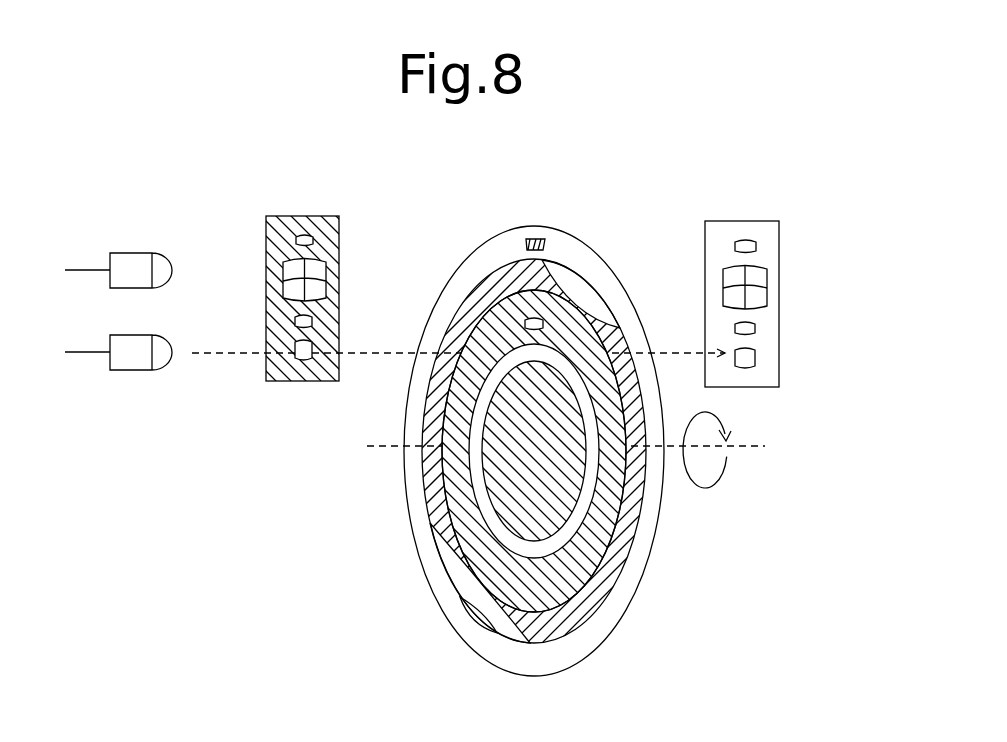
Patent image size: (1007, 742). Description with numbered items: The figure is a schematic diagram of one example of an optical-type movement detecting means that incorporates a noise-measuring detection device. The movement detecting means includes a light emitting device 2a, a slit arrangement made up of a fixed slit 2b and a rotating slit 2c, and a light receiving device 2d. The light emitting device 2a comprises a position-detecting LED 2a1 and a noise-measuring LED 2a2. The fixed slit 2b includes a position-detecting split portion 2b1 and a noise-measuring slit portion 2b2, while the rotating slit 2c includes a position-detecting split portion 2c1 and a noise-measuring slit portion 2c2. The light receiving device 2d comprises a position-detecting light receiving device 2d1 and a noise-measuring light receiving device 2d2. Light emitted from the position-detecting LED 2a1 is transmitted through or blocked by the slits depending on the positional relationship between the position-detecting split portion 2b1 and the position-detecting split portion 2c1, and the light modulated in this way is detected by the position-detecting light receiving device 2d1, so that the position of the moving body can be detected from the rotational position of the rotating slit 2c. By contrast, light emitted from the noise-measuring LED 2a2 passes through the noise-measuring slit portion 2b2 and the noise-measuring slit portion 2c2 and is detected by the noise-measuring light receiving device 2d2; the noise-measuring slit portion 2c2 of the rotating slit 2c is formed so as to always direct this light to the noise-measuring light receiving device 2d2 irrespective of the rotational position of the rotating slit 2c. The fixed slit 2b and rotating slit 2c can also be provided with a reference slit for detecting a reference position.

The light emitting device 2a is at (148, 254).
The position-detecting LED 2a1 is at (170, 253).
The noise-measuring LED 2a2 is at (171, 338).
The fixed slit 2b is at (306, 259).
The position-detecting split portion 2b1 is at (347, 266).
The noise-measuring slit portion 2b2 is at (347, 343).
The rotating slit 2c is at (503, 412).
The position-detecting split portion 2c1 is at (561, 249).
The noise-measuring slit portion 2c2 is at (558, 369).
The light receiving device 2d is at (786, 265).
The position-detecting light receiving device 2d1 is at (788, 274).
The noise-measuring light receiving device 2d2 is at (787, 354).